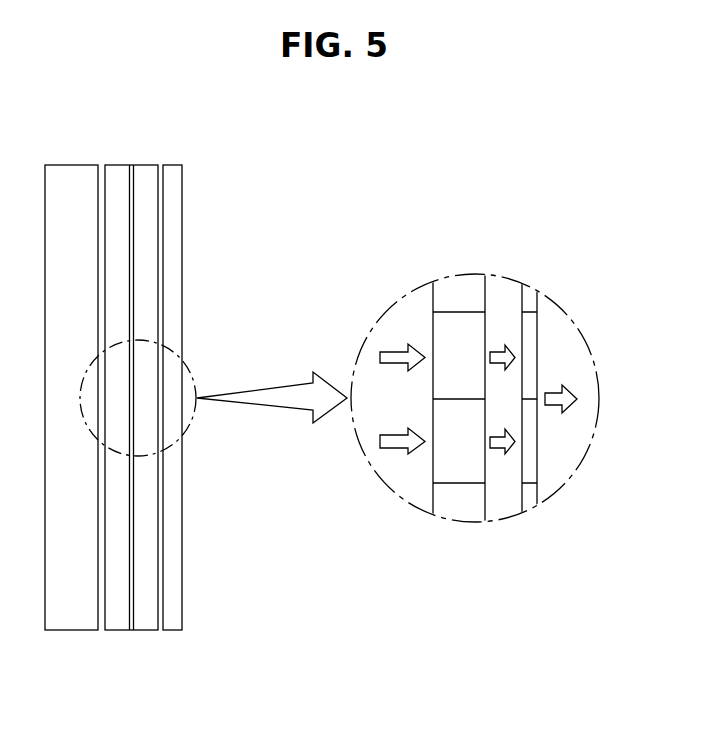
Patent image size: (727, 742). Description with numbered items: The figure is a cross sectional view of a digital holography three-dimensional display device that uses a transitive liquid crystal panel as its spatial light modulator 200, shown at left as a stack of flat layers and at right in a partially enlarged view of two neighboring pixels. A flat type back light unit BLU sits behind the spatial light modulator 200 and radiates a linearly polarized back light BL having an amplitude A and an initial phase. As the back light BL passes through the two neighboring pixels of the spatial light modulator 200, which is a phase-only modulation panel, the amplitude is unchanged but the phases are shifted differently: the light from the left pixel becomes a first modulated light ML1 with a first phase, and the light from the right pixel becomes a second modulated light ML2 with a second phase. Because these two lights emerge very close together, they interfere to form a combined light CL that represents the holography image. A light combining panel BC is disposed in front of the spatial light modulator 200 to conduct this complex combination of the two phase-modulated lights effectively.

The back light unit BLU is at (68, 618).
The spatial light modulator 200 is at (120, 618).
The light combining panel BC is at (168, 618).
The back light BL is at (395, 350).
The first modulated light ML1 is at (495, 348).
The second modulated light ML2 is at (495, 450).
The combined light CL is at (552, 388).